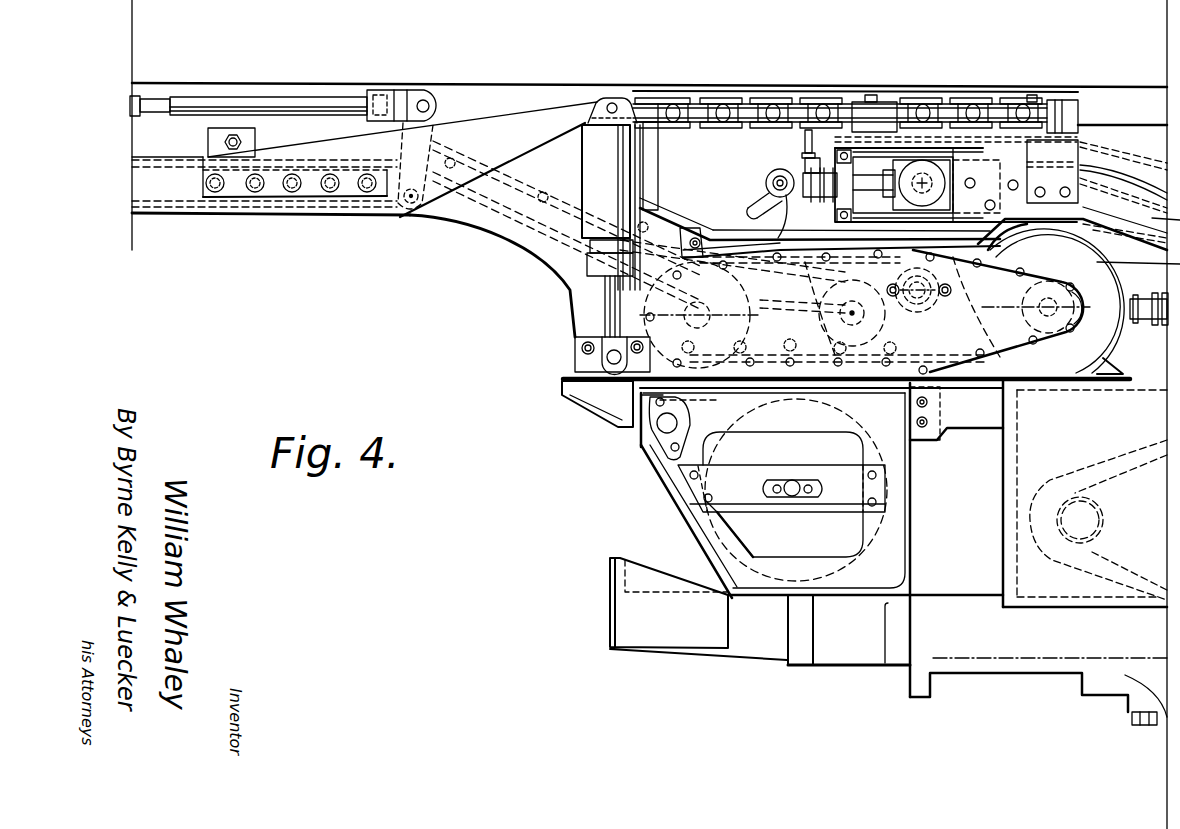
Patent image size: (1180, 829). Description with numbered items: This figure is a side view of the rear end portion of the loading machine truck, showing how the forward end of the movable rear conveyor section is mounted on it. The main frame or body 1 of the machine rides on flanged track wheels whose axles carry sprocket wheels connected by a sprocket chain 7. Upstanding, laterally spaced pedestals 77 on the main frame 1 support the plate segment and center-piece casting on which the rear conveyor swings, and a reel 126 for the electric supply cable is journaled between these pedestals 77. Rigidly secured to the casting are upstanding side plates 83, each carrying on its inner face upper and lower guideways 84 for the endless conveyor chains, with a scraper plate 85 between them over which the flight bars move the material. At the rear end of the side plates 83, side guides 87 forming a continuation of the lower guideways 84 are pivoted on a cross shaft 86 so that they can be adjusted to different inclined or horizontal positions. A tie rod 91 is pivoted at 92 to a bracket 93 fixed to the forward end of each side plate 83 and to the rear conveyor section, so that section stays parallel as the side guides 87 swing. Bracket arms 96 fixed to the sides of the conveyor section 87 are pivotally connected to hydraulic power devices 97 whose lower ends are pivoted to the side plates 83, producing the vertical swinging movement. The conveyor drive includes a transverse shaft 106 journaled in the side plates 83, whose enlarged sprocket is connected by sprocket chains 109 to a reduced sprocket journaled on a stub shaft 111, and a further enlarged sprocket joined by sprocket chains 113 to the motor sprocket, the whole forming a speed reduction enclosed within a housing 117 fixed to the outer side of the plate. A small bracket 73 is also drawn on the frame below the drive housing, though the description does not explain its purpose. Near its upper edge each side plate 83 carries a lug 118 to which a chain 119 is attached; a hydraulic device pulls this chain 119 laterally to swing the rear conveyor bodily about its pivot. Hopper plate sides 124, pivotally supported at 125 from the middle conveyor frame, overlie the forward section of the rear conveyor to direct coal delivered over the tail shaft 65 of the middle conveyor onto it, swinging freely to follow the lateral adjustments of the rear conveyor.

The main frame 1 is at (1008, 645).
The sprocket chain 7 is at (625, 330).
The tail shaft 65 is at (925, 175).
The bracket 73 is at (915, 440).
The pedestals 77 is at (675, 465).
The side plates 83 is at (570, 289).
The guideways 84 is at (522, 223).
The scraper plate 85 is at (497, 202).
The cross shaft 86 is at (410, 203).
The side guides 87 is at (193, 191).
The tie rod 91 is at (248, 105).
The pivot 92 is at (427, 103).
The bracket 93 is at (437, 128).
The bracket arms 96 is at (483, 148).
The hydraulic power devices 97 is at (617, 167).
The shaft 106 is at (735, 316).
The sprocket chains 109 is at (778, 382).
The stub shaft 111 is at (917, 303).
The sprocket chains 113 is at (1035, 345).
The housing 117 is at (1010, 349).
The lug 118 is at (643, 106).
The chain 119 is at (758, 99).
The hopper plate sides 124 is at (717, 86).
The pivotal support 125 is at (810, 150).
The reel 126 is at (686, 518).